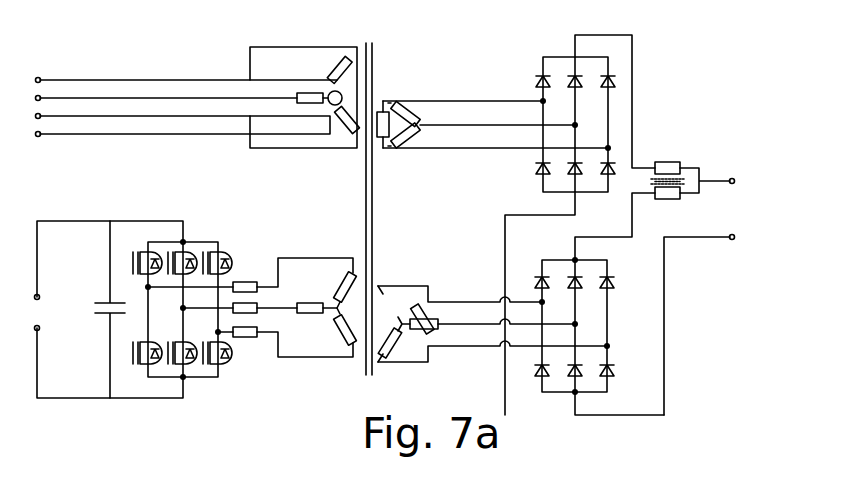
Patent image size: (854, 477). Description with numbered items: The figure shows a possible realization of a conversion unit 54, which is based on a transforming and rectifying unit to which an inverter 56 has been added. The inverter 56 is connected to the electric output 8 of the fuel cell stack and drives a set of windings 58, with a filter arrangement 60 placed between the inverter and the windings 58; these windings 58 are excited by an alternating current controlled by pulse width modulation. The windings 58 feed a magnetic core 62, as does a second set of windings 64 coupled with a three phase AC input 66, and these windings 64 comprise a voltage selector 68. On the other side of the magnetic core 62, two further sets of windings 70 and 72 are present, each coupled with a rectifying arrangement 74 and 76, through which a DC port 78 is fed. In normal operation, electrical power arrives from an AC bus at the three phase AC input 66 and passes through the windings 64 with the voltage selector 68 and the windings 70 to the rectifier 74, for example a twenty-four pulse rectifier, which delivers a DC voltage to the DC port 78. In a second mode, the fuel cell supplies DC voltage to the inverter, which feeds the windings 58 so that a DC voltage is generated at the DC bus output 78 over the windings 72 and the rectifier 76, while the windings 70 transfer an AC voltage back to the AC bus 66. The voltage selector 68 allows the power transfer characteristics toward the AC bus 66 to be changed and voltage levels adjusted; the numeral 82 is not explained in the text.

The electric output 8 is at (46, 314).
The conversion unit 54 is at (507, 52).
The inverter 56 is at (180, 322).
The windings 58 is at (312, 365).
The filter arrangement 60 is at (167, 404).
The magnetic core 62 is at (385, 61).
The windings 64 is at (303, 115).
The three phase AC input 66 is at (82, 73).
The voltage selector 68 is at (332, 82).
The windings 70 is at (400, 158).
The windings 72 is at (413, 272).
The rectifying arrangement 74 is at (655, 83).
The rectifying arrangement 76 is at (699, 349).
The DC port 78 is at (750, 211).
The controller 82 is at (270, 476).